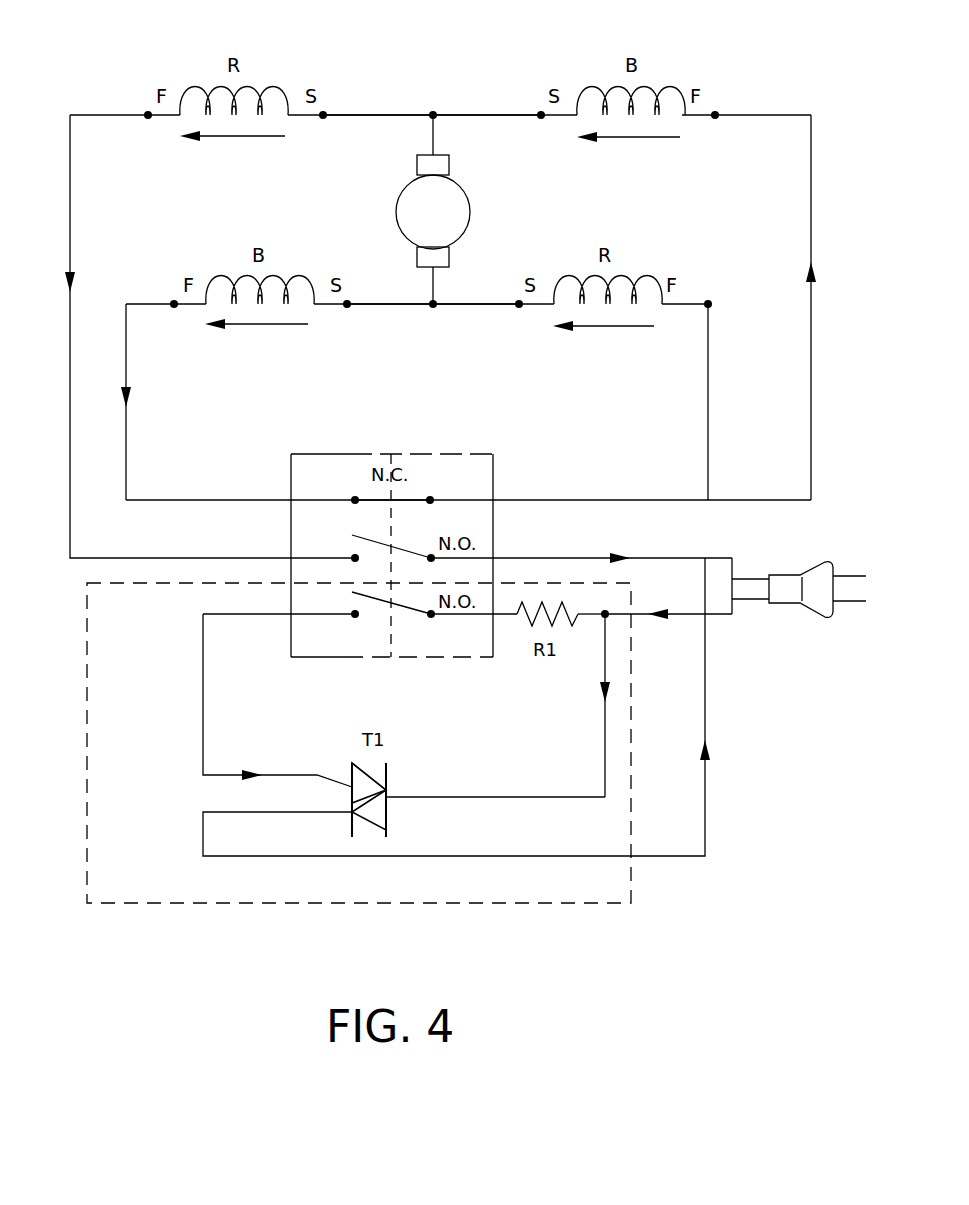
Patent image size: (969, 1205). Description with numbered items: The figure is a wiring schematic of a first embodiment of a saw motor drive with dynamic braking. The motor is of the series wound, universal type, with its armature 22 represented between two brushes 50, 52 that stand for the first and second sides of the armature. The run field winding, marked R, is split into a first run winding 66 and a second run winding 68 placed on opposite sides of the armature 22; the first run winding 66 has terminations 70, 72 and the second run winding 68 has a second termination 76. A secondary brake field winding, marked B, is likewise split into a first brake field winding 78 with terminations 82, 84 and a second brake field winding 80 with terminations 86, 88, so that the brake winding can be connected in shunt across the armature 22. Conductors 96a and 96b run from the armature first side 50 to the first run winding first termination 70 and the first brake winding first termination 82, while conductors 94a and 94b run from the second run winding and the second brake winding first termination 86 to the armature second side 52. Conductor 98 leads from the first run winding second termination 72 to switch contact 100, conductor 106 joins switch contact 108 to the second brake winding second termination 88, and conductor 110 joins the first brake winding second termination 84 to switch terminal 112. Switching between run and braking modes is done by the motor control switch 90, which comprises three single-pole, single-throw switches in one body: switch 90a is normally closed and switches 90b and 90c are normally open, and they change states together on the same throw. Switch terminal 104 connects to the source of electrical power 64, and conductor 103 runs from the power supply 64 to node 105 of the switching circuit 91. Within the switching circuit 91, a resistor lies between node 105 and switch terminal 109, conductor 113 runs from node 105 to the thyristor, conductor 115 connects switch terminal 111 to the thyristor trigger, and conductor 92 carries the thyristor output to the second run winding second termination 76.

The armature 22 is at (396, 212).
The brush 50 is at (449, 166).
The brush 52 is at (449, 258).
The source of electrical power 64 is at (812, 617).
The first run winding 66 is at (258, 82).
The second run winding 68 is at (625, 280).
The first run winding first termination 70 is at (323, 113).
The first run winding second termination 72 is at (148, 113).
The second run winding second termination 76 is at (708, 303).
The first brake field winding 78 is at (643, 82).
The second brake field winding 80 is at (235, 280).
The first brake field winding first termination 82 is at (510, 114).
The first brake field winding second termination 84 is at (715, 114).
The second brake field winding first termination 86 is at (347, 303).
The second brake field winding second termination 88 is at (174, 303).
The motor control switch 90 is at (390, 432).
The normally closed switch 90a is at (410, 500).
The normally open switch 90b is at (407, 547).
The normally open switch 90c is at (395, 612).
The switching circuit 91 is at (425, 924).
The conductor 92 is at (705, 683).
The conductor 94a is at (462, 305).
The conductor 94b is at (383, 305).
The conductor 96a is at (380, 114).
The conductor 96b is at (465, 114).
The conductor 98 is at (70, 425).
The switch contact 100 is at (355, 557).
The conductor 103 is at (689, 616).
The switch terminal 104 is at (433, 560).
The node 105 is at (604, 617).
The conductor 106 is at (126, 452).
The switch contact 108 is at (355, 500).
The switch terminal 109 is at (431, 616).
The conductor 110 is at (811, 320).
The switch terminal 111 is at (355, 616).
The switch terminal 112 is at (432, 498).
The conductor 113 is at (480, 797).
The conductor 115 is at (203, 657).